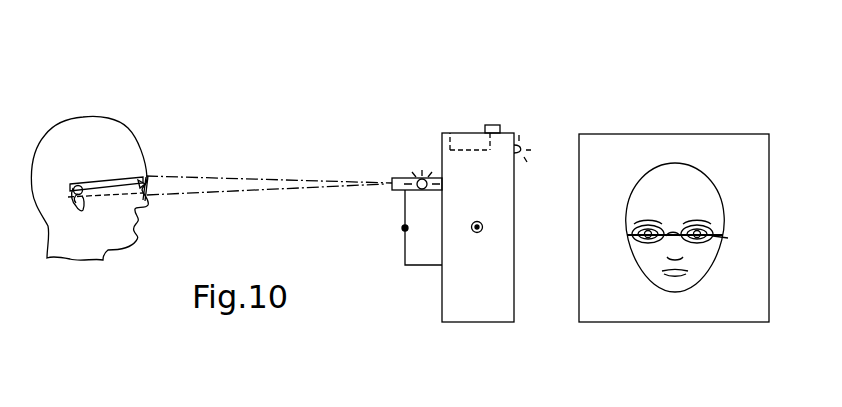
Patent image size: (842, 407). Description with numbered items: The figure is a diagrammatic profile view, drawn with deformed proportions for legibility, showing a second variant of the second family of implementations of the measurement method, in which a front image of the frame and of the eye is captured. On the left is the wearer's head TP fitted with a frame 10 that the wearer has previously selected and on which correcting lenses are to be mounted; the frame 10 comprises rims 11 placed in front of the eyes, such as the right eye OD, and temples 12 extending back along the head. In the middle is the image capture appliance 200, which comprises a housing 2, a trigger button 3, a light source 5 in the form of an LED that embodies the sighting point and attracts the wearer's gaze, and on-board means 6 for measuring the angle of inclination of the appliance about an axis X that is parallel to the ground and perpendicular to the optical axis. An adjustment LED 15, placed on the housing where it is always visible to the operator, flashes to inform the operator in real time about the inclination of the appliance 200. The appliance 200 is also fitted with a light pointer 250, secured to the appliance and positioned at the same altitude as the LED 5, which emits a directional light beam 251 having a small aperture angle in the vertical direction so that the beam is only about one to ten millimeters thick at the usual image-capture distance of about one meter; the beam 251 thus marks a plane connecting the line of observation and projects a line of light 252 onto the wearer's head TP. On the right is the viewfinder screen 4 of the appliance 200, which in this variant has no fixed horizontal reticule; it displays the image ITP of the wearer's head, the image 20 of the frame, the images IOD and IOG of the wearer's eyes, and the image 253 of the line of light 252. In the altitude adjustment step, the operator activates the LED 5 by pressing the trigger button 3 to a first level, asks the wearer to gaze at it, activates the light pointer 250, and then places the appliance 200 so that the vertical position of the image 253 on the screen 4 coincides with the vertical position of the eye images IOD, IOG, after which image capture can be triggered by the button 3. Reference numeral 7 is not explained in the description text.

The wearer's head TP is at (84, 111).
The temple 12 is at (110, 178).
The rim 11 is at (148, 177).
The right eye OD is at (136, 186).
The line of light 252 is at (105, 200).
The frame 10 is at (167, 169).
The directional light beam 251 is at (260, 193).
The image capture appliance 200 is at (519, 303).
The housing 2 is at (447, 133).
The trigger button 3 is at (488, 125).
The means for measuring an angle of inclination 6 is at (467, 145).
The adjustment LED 15 is at (522, 148).
The axis X is at (486, 238).
The light pointer 250 is at (407, 177).
The light source 5 is at (405, 190).
The pivot point 7 is at (405, 232).
The viewfinder screen 4 is at (667, 323).
The image of the wearer's head ITP is at (650, 156).
The image of the frame 20 is at (643, 252).
The image of the right eye IOD is at (647, 217).
The image of the left eye IOG is at (703, 217).
The image of the line of light 253 is at (727, 237).